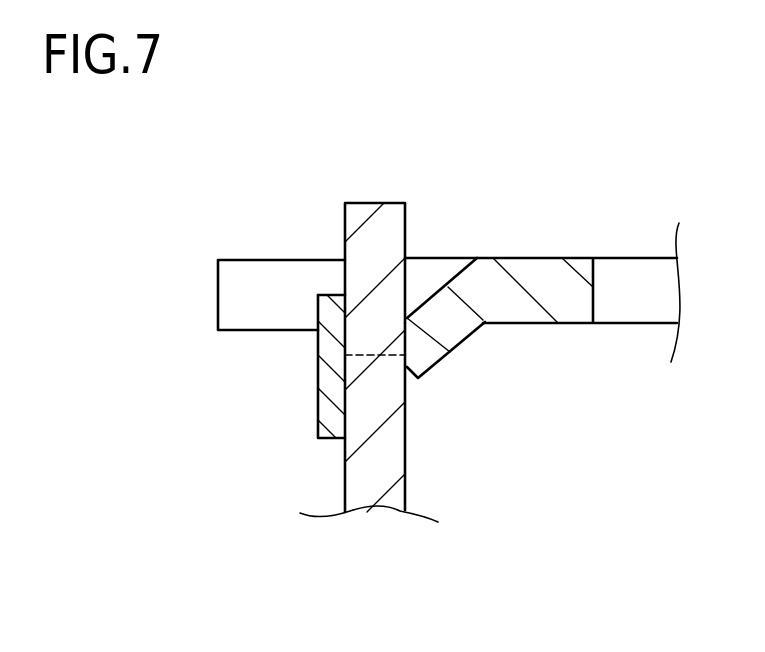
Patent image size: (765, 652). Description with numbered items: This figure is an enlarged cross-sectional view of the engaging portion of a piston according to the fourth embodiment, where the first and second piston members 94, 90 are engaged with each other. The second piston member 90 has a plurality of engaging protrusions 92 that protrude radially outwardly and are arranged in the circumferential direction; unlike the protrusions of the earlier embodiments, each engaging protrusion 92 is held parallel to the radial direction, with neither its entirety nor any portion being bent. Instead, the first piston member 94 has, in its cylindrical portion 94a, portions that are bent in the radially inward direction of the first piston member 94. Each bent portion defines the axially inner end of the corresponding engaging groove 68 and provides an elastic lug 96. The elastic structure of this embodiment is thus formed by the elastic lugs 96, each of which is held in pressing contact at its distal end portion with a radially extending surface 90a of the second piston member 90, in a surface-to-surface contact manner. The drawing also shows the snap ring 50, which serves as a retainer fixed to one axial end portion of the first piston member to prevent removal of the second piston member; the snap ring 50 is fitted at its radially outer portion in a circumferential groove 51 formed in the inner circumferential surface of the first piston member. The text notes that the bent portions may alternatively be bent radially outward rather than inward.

The snap ring 50 is at (255, 327).
The circumferential groove 51 is at (328, 303).
The engaging groove 68 is at (250, 273).
The second piston member 90 is at (416, 354).
The radially extending surface 90a is at (408, 407).
The engaging protrusion 92 is at (367, 220).
The first piston member 94 is at (542, 258).
The cylindrical portion 94a is at (543, 278).
The elastic lug 96 is at (425, 347).